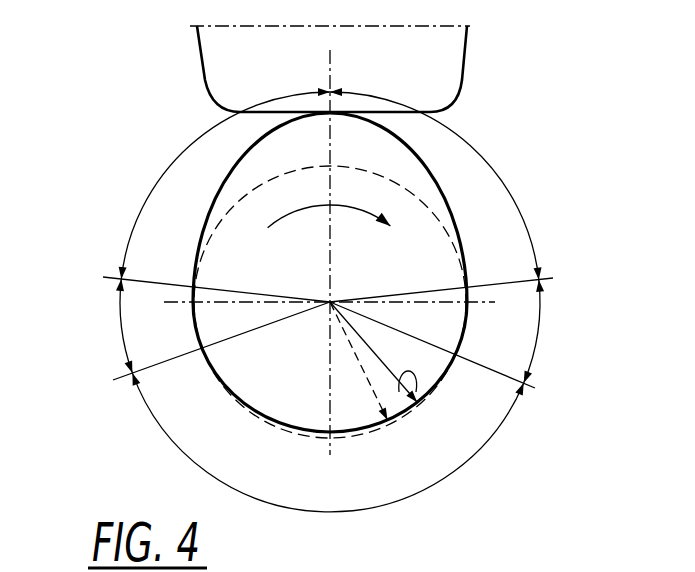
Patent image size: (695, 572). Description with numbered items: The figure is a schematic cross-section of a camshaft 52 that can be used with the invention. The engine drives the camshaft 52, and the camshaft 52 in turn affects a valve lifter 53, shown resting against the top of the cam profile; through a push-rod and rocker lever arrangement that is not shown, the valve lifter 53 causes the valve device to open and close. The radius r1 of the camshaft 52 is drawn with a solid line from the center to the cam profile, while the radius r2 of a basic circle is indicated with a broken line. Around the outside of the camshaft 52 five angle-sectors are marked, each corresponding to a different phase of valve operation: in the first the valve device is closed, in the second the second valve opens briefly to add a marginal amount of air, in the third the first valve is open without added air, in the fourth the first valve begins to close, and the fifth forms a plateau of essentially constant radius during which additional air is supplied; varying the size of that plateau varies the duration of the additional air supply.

The camshaft 52 is at (258, 386).
The valve lifter 53 is at (207, 81).
The radius of the camshaft r1 is at (420, 400).
The radius of the basic circle r2 is at (373, 390).